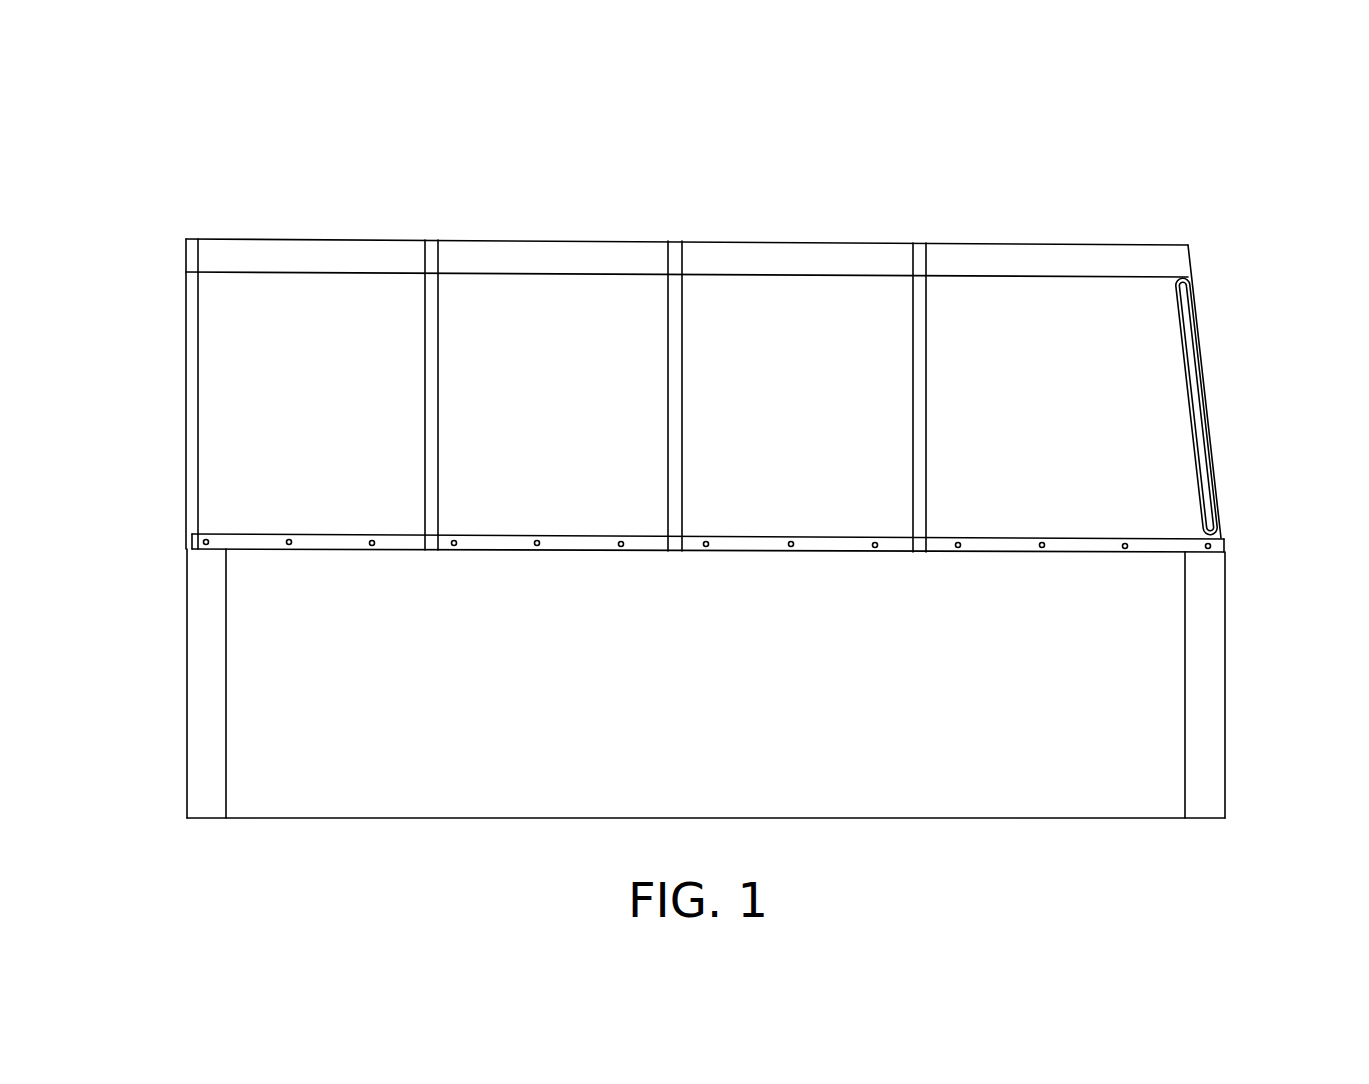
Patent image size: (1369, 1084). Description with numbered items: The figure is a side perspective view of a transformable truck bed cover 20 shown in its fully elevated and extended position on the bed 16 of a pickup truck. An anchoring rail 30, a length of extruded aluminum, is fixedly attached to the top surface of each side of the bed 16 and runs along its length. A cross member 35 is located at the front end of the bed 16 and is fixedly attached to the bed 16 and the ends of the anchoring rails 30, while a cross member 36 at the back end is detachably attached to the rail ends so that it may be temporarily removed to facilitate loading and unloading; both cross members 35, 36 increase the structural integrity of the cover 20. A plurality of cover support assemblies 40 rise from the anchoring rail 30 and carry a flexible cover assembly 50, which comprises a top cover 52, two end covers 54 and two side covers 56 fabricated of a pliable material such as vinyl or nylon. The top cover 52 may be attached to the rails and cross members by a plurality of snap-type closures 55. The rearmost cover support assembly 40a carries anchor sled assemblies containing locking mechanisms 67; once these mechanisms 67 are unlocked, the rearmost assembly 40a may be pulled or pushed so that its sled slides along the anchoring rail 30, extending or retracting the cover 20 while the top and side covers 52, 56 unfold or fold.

The transformable truck bed cover 20 is at (1014, 193).
The top cover 52 is at (372, 238).
The flexible cover assembly 50 is at (573, 290).
The cover support assembly 40 is at (673, 305).
The side cover 56 is at (1032, 393).
The end cover 54 is at (1193, 283).
The rearmost cover support assembly 40a is at (1195, 352).
The locking mechanism 67 is at (1220, 533).
The anchoring rail 30 is at (1218, 544).
The snap-type closure 55 is at (1125, 549).
The cross member 35 is at (192, 543).
The cross member 36 is at (1226, 553).
The bed 16 is at (657, 693).